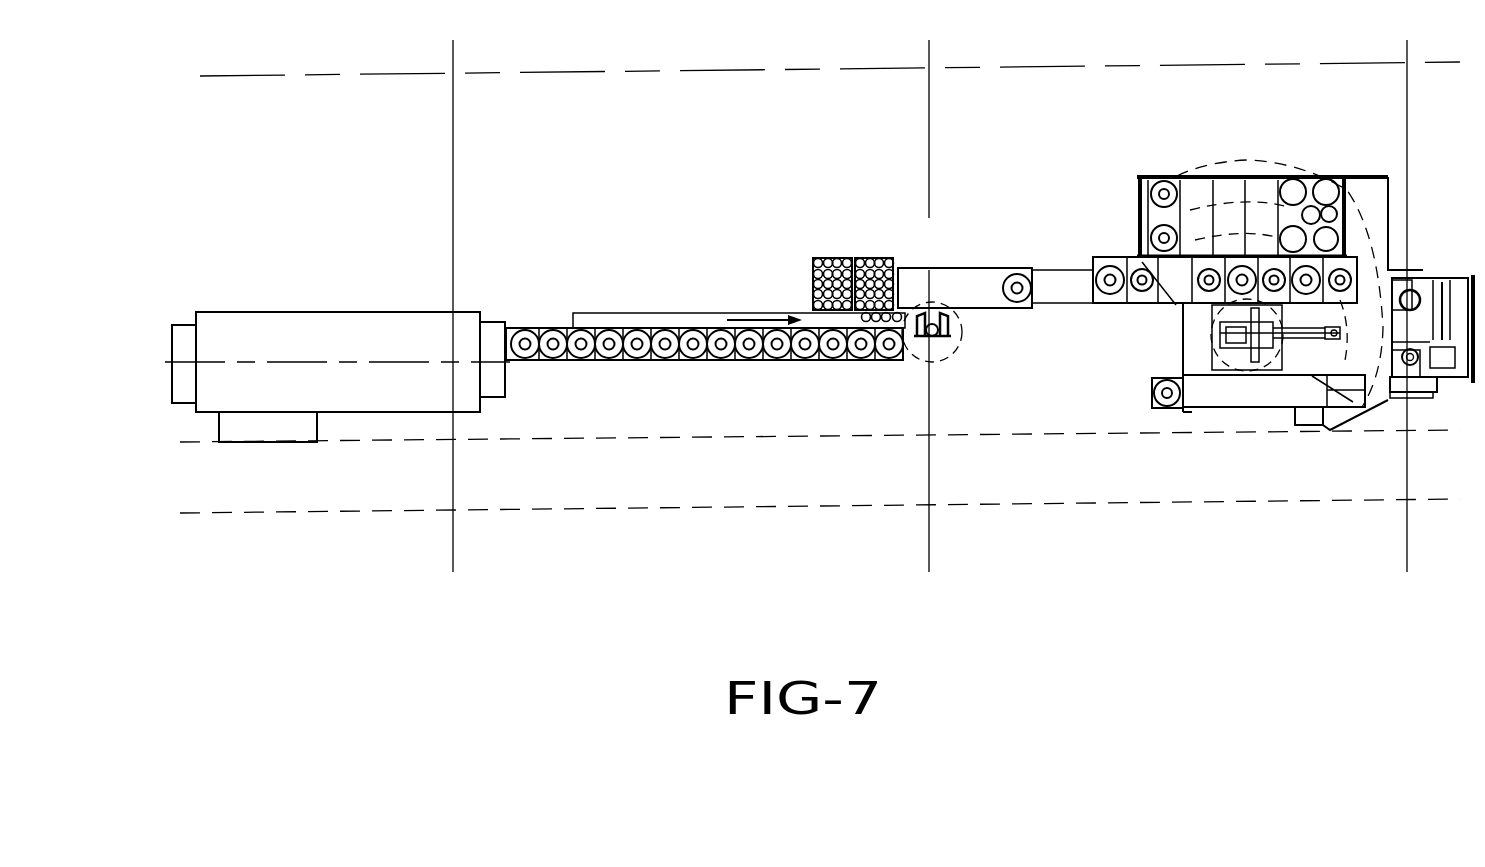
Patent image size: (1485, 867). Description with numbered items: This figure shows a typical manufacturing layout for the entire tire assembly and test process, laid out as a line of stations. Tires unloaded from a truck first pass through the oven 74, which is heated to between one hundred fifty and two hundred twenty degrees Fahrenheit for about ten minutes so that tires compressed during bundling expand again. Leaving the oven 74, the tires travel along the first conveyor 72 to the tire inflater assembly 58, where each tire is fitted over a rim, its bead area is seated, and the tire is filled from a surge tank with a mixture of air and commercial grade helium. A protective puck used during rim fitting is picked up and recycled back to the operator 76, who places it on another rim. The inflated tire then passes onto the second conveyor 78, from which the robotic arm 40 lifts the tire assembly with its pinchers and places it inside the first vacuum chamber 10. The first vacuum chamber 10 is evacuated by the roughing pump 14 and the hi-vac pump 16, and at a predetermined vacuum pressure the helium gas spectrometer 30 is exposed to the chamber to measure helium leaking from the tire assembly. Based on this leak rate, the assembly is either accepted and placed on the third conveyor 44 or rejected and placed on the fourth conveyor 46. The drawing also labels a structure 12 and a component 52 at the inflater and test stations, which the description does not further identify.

The first vacuum chamber 10 is at (1410, 362).
The frame 12 is at (1410, 300).
The roughing pump 14 is at (1448, 372).
The hi-vac pump 16 is at (1442, 300).
The helium gas spectrometer 30 is at (1465, 297).
The robotic arm 40 is at (1316, 335).
The third conveyor 44 is at (1297, 177).
The fourth conveyor 46 is at (1242, 397).
The parts bins 52 is at (813, 277).
The tire inflater assembly 58 is at (980, 268).
The first conveyor 72 is at (650, 360).
The oven 74 is at (252, 330).
The operator 76 is at (938, 338).
The second conveyor 78 is at (1176, 305).